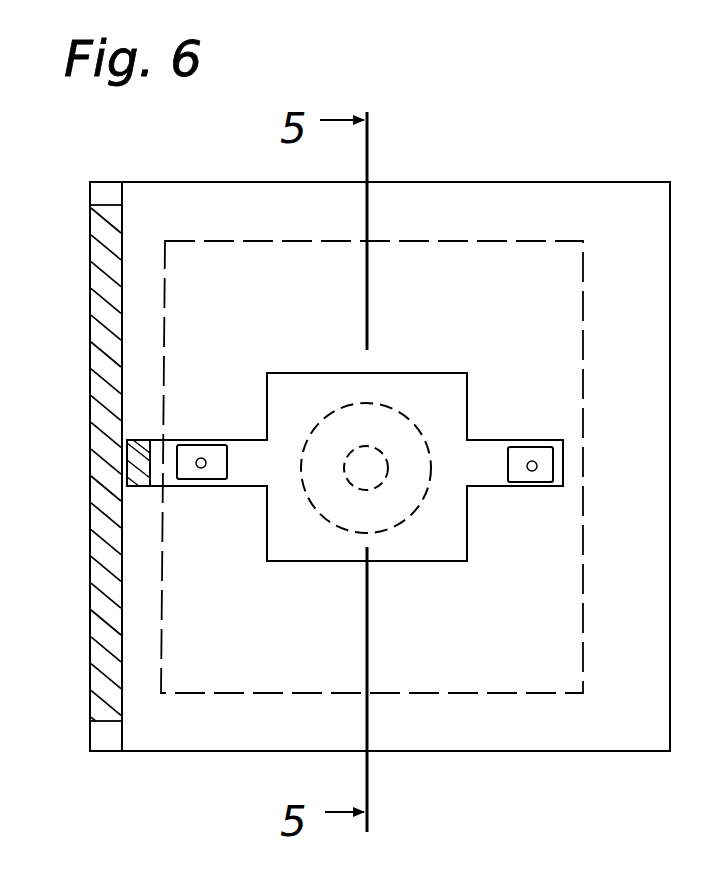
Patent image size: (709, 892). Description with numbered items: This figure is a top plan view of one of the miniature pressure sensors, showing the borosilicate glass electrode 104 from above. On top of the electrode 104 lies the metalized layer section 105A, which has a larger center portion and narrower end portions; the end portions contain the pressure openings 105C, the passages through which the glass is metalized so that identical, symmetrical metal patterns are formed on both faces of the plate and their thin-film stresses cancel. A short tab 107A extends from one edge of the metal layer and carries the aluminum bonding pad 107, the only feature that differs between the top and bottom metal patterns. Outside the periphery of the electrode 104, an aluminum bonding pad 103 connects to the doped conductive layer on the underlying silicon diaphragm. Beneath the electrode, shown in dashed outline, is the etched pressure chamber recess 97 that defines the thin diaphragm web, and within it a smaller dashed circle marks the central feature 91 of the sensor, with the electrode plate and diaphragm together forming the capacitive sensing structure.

The borosilicate glass electrode 104 is at (403, 197).
The aluminum bonding pad 103 is at (92, 477).
The metalized layer section 105A is at (372, 392).
The bonding pad 107 is at (135, 438).
The short tab 107A is at (168, 448).
The pressure openings 105C is at (185, 475).
The pressure chamber recess 97 is at (423, 438).
The shaft 91 is at (386, 477).